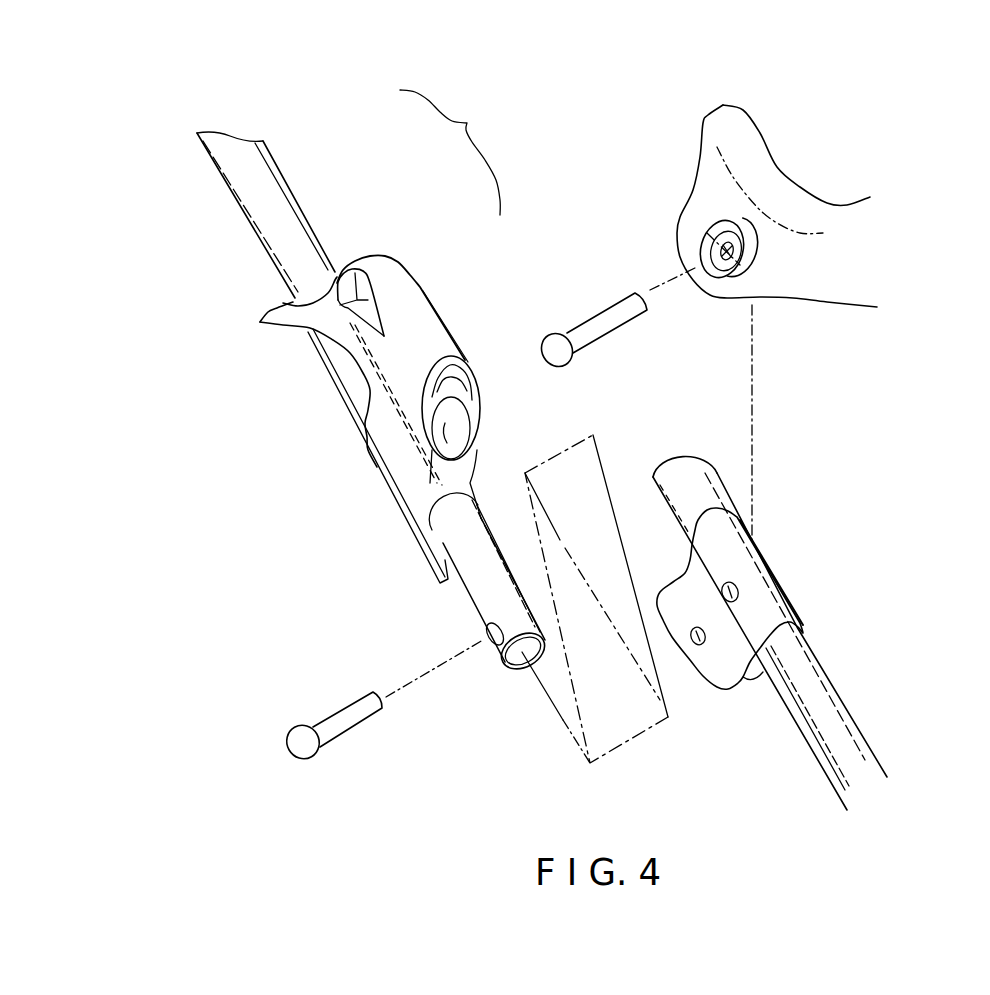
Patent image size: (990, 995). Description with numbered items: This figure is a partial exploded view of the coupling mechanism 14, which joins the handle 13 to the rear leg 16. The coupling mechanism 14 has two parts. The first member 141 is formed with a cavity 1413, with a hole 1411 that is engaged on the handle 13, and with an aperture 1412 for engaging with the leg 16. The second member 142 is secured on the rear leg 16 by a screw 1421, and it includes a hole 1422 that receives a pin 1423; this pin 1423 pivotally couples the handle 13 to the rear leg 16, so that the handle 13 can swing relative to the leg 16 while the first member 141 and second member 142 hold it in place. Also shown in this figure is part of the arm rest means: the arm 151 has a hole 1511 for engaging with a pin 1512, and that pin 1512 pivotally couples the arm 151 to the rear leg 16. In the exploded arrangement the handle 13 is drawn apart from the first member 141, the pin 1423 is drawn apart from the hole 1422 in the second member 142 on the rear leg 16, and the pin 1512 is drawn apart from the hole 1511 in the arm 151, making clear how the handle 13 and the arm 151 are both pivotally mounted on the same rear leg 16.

The handle 13 is at (257, 197).
The coupling mechanism 14 is at (579, 460).
The first member 141 is at (425, 437).
The hole 1411 is at (457, 497).
The aperture 1412 is at (440, 455).
The cavity 1413 is at (352, 292).
The second member 142 is at (778, 618).
The screw 1421 is at (723, 580).
The hole 1422 is at (698, 644).
The pin 1423 is at (343, 727).
The arm 151 is at (744, 285).
The hole 1511 is at (722, 250).
The pin 1512 is at (602, 325).
The rear leg 16 is at (822, 690).